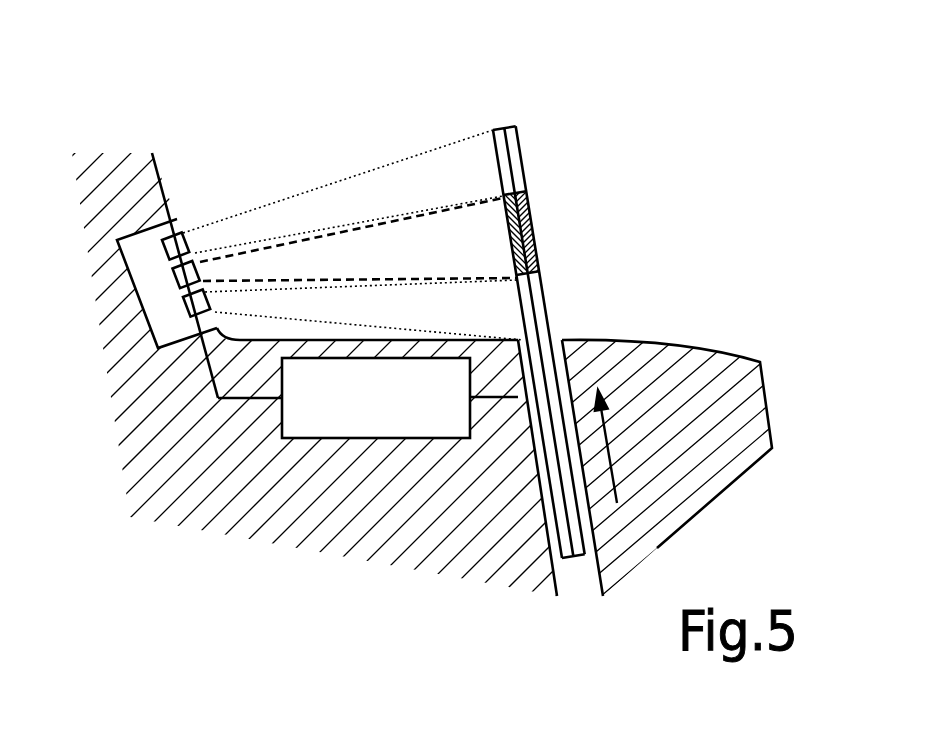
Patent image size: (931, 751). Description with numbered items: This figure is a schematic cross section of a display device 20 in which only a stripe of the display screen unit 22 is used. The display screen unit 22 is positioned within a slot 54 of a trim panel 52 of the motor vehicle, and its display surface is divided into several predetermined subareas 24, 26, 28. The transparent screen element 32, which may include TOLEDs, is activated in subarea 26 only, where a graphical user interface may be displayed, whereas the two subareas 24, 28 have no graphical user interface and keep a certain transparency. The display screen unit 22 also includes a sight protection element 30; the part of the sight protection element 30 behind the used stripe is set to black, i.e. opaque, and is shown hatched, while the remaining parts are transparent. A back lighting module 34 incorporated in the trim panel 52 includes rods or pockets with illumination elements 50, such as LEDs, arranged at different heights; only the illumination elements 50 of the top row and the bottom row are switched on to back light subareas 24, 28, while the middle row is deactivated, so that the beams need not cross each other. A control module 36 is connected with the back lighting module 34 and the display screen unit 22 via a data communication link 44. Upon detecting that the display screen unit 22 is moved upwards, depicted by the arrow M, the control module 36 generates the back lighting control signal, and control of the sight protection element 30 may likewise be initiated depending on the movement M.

The display device 20 is at (603, 226).
The display screen unit 22 is at (532, 279).
The subarea 24 is at (543, 158).
The subarea 26 is at (547, 203).
The subarea 28 is at (567, 311).
The sight protection element 30 is at (495, 128).
The transparent screen element 32 is at (517, 128).
The back lighting module 34 is at (152, 220).
The control module 36 is at (373, 440).
The data communication link 44 is at (252, 398).
The illumination elements 50 is at (180, 250).
The trim panel 52 is at (407, 333).
The slot 54 is at (548, 550).
The movement M is at (607, 443).